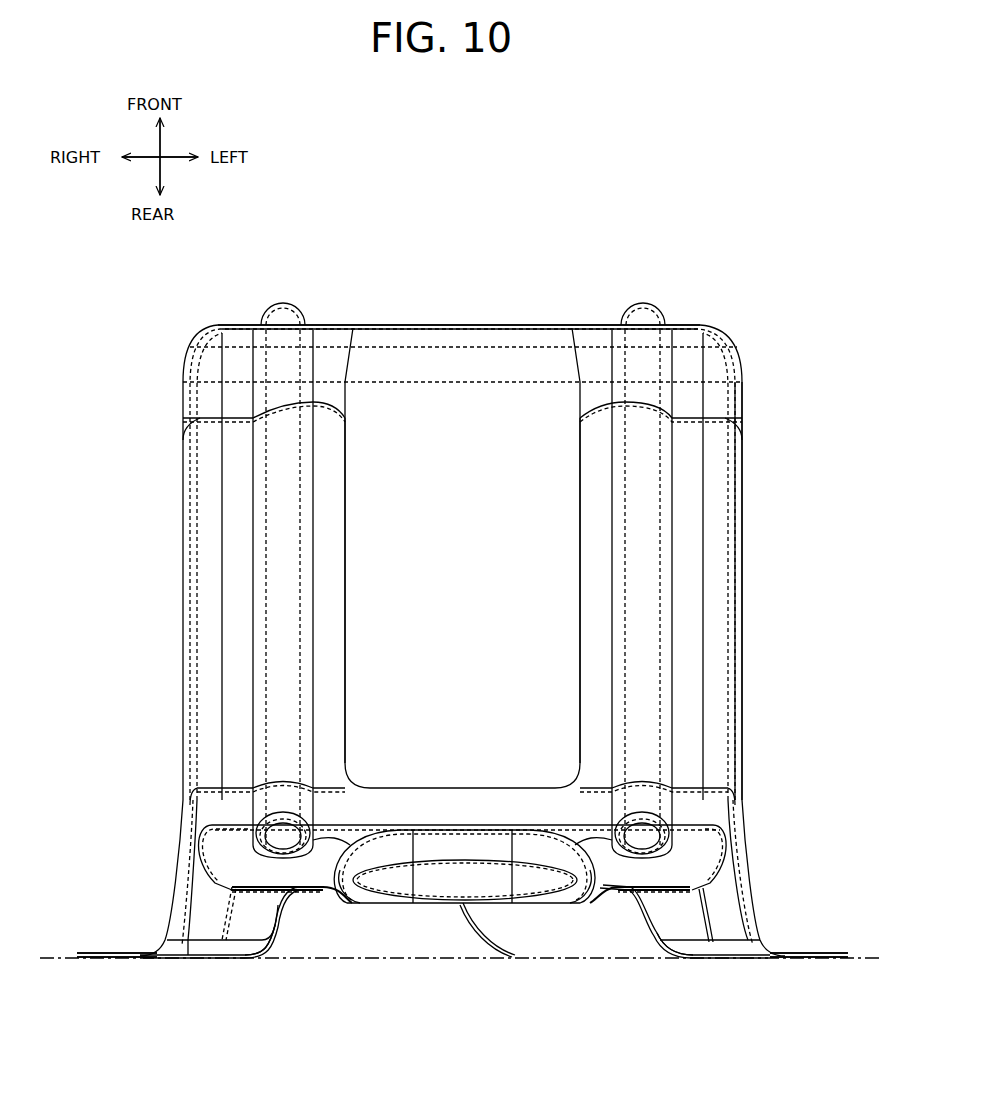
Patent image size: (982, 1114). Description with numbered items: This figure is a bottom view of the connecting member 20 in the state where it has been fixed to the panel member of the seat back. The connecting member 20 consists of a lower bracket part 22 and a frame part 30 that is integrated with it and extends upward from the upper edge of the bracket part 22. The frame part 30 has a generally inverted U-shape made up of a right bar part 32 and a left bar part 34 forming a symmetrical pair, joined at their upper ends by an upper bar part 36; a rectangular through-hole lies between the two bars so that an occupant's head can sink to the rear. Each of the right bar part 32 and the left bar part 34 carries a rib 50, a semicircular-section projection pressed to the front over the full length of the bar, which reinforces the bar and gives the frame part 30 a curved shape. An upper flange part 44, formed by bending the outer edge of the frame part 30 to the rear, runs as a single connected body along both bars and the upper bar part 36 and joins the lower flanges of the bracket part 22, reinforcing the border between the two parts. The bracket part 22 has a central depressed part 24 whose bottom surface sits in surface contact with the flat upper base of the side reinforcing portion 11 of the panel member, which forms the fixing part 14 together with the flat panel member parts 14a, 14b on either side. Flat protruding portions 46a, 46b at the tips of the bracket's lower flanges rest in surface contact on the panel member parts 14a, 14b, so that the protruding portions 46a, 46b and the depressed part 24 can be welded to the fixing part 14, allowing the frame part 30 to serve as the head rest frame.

The connecting member 20 is at (463, 588).
The frame part 30 is at (463, 551).
The upper bar part 36 is at (466, 322).
The right bar part 32 is at (181, 560).
The left bar part 34 is at (745, 560).
The rib 50 is at (283, 306).
The upper flange part 44 is at (748, 420).
The bracket part 22 is at (758, 877).
The depressed part 24 is at (493, 907).
The fixing part 14 is at (190, 965).
The panel member part 14a is at (282, 952).
The panel member part 14b is at (593, 953).
The side reinforcing portion 11 is at (343, 913).
The protruding portion 46a is at (100, 953).
The protruding portion 46b is at (828, 953).